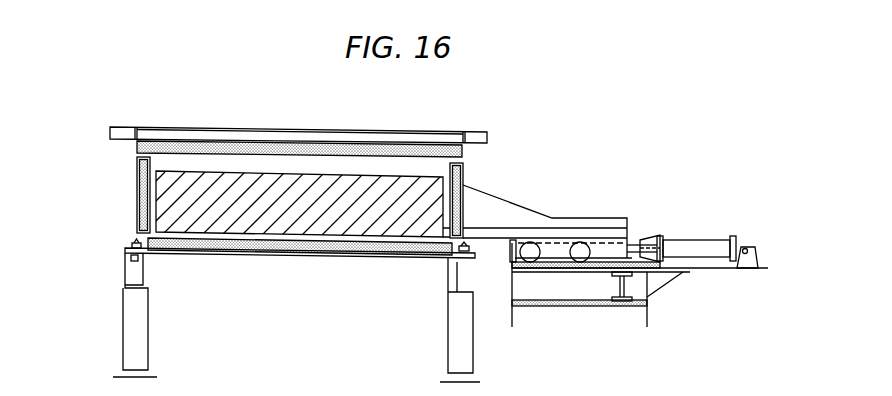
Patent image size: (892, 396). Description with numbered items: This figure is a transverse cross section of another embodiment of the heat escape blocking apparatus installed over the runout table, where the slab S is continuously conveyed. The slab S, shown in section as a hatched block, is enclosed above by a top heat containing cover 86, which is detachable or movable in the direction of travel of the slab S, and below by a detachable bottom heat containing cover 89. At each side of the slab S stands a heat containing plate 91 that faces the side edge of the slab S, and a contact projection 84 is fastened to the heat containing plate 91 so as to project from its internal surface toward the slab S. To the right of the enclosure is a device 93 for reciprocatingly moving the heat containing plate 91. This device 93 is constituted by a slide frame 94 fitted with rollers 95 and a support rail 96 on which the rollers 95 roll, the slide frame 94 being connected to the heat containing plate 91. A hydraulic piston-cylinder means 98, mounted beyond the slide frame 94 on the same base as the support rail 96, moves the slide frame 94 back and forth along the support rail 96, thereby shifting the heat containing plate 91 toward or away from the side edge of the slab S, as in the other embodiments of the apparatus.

The top heat containing cover 86 is at (312, 140).
The heat containing plate 91 is at (137, 172).
The slab S is at (213, 227).
The bottom heat containing cover 89 is at (290, 255).
The contact projection 84 is at (135, 238).
The slide frame 94 is at (502, 199).
The device for reciprocatingly moving the heat containing plate 93 is at (553, 208).
The rollers 95 is at (588, 248).
The hydraulic piston-cylinder means 98 is at (683, 238).
The support rail 96 is at (512, 243).